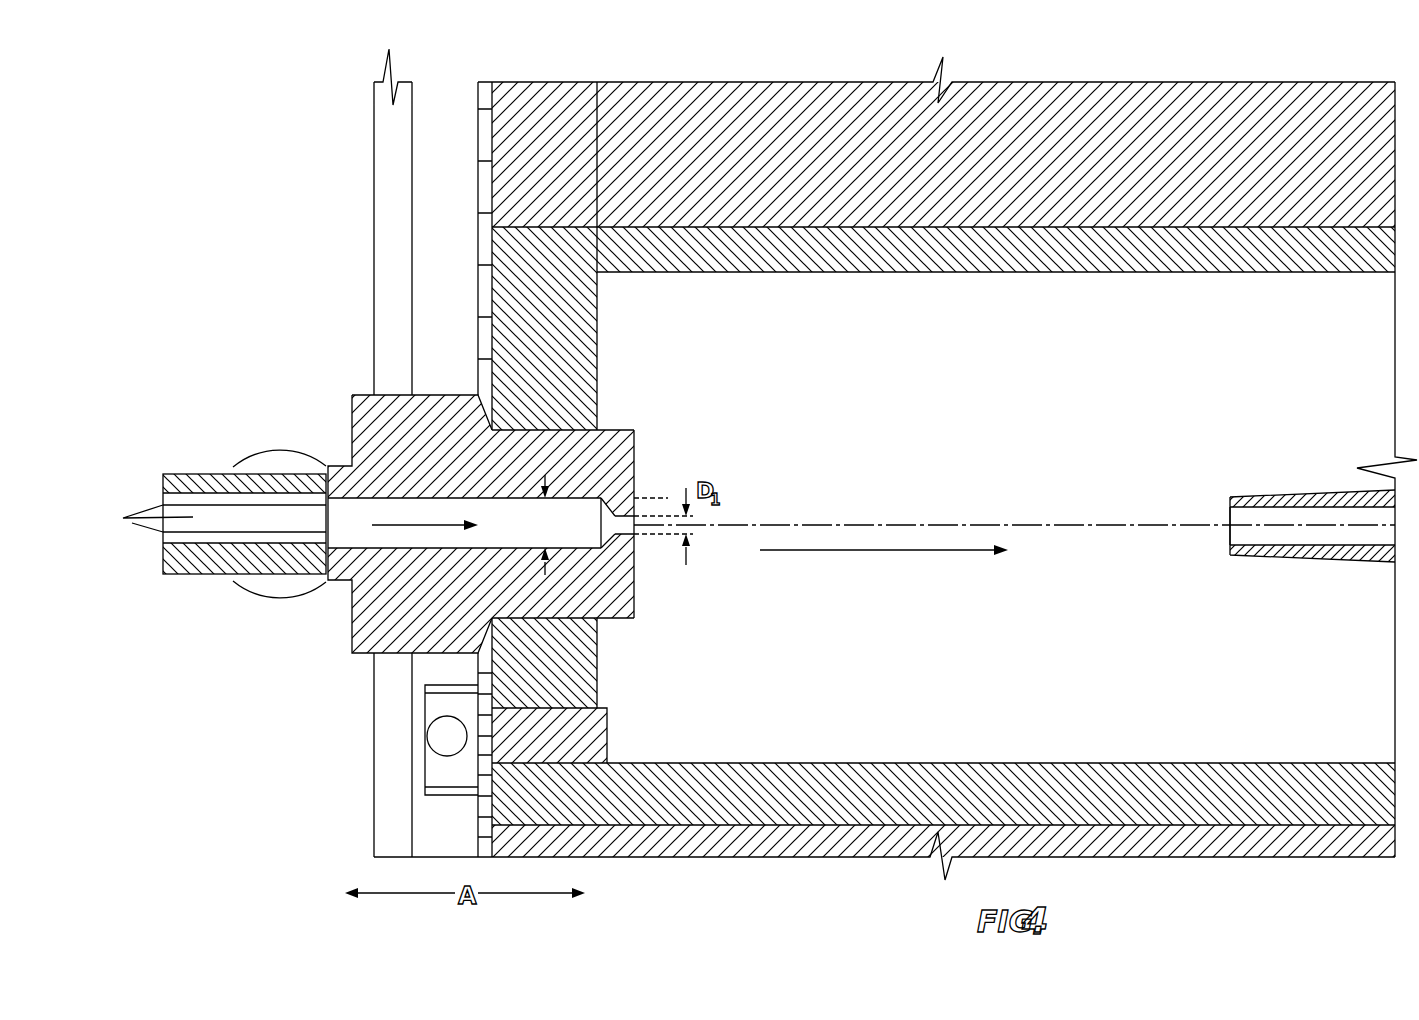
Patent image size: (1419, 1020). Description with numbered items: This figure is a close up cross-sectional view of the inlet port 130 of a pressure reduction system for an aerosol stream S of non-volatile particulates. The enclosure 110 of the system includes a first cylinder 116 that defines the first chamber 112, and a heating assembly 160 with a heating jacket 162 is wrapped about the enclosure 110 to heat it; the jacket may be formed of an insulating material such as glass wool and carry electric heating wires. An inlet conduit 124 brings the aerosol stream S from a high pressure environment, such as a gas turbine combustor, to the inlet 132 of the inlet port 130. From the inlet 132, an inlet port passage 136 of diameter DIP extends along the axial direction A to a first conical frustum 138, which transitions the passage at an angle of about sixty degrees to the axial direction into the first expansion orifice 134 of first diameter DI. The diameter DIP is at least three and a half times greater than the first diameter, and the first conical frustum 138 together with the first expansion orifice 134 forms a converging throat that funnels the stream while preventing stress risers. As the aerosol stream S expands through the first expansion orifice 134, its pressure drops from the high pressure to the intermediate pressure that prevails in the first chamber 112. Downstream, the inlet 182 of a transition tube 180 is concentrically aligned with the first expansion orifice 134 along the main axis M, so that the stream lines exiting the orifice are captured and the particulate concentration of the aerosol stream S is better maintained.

The enclosure 110 is at (807, 212).
The first chamber 112 is at (1208, 356).
The first cylinder 116 is at (1045, 240).
The inlet conduit 124 is at (197, 474).
The inlet port 130 is at (497, 501).
The inlet 132 is at (306, 521).
The first expansion orifice 134 is at (624, 553).
The inlet port passage 136 is at (511, 505).
The first conical frustum 138 is at (604, 566).
The heating assembly 160 is at (567, 68).
The heating jacket 162 is at (677, 118).
The transition tube 180 is at (1328, 466).
The inlet 182 is at (1213, 537).